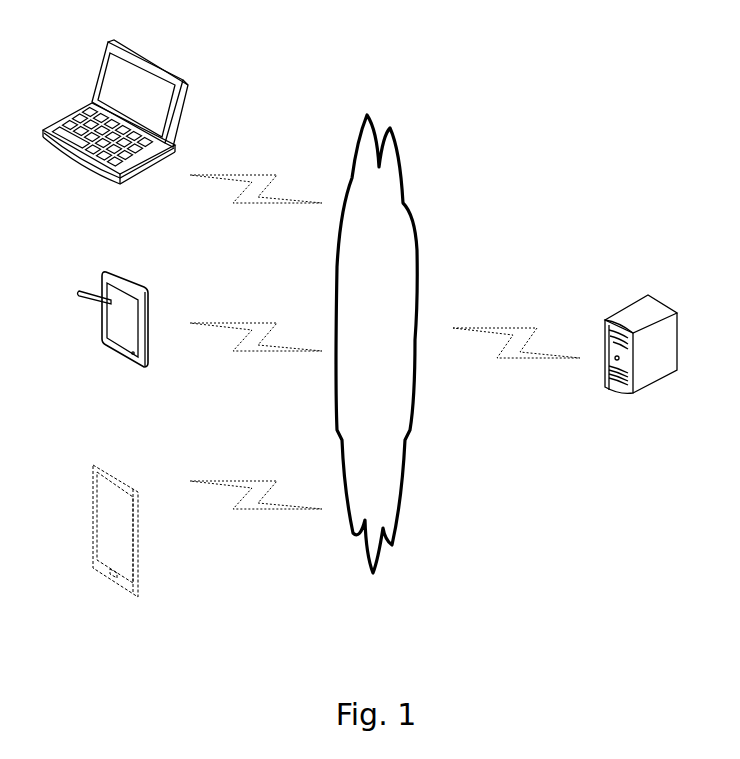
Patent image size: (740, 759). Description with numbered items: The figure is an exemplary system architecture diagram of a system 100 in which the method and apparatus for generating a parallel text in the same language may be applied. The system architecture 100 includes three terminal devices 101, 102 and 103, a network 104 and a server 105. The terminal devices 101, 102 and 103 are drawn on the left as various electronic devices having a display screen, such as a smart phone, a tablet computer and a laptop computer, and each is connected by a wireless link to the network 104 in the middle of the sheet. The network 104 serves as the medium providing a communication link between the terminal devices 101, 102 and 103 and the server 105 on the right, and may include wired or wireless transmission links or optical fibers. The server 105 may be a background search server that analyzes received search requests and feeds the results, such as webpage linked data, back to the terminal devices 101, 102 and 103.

The system architecture 100 is at (668, 93).
The terminal device 101 is at (116, 552).
The terminal device 102 is at (113, 339).
The terminal device 103 is at (115, 133).
The network 104 is at (376, 344).
The server 105 is at (641, 369).